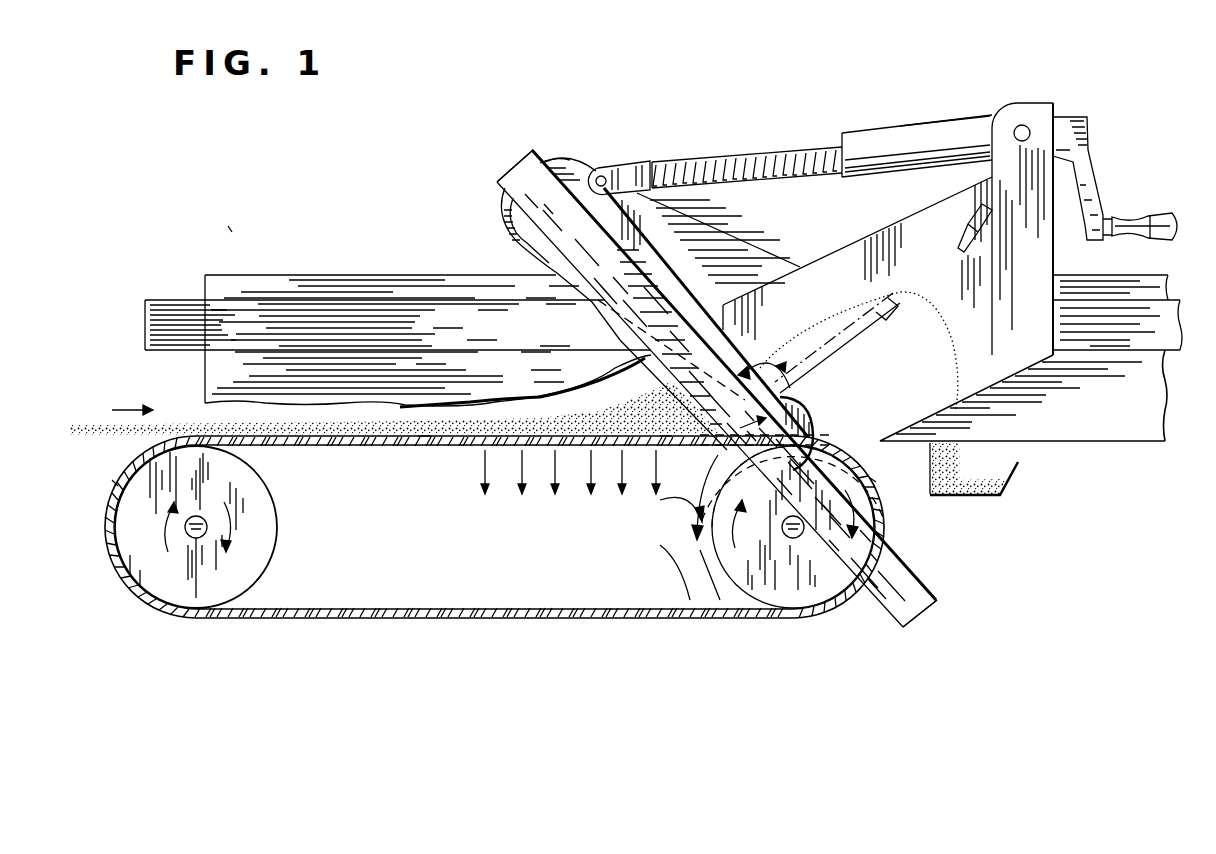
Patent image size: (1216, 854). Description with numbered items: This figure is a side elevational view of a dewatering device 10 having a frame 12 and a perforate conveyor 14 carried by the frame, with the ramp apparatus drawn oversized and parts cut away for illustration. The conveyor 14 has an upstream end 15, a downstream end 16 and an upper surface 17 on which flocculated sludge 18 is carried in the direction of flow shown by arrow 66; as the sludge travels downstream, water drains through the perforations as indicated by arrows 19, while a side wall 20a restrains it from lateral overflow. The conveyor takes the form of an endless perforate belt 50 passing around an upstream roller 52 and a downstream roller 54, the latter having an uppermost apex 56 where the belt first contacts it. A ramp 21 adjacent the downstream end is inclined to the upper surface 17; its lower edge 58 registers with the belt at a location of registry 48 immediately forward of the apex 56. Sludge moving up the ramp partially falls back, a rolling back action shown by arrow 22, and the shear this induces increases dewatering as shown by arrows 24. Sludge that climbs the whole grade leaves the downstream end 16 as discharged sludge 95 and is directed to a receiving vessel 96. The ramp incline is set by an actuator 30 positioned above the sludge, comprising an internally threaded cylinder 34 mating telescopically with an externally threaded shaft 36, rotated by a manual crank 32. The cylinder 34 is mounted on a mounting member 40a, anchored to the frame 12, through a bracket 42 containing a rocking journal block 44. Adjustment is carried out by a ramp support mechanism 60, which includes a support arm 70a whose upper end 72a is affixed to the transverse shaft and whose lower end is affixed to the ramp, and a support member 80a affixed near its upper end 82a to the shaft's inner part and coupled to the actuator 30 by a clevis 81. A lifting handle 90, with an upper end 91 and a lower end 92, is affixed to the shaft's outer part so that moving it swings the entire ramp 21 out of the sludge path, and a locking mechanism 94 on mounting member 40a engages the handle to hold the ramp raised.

The dewatering device 10 is at (232, 232).
The frame 12 is at (166, 300).
The perforate conveyor 14 is at (348, 442).
The upstream end 15 is at (115, 487).
The downstream end 16 is at (873, 480).
The upper surface 17 is at (668, 440).
The sludge 18 is at (600, 407).
The arrows 19 is at (655, 492).
The side wall 20a is at (340, 285).
The ramp 21 is at (858, 310).
The arrow 22 is at (760, 370).
The arrows 24 is at (694, 528).
The actuator 30 is at (874, 122).
The manual crank 32 is at (1100, 185).
The cylinder 34 is at (952, 120).
The shaft 36 is at (748, 148).
The mounting member 40a is at (1015, 358).
The bracket 42 is at (1040, 125).
The journal block 44 is at (1000, 105).
The location of registry 48 is at (786, 466).
The endless perforate belt 50 is at (424, 448).
The upstream roller 52 is at (268, 572).
The downstream roller 54 is at (753, 610).
The apex 56 is at (820, 442).
The lower edge 58 is at (812, 404).
The ramp support mechanism 60 is at (562, 156).
The arrow 66 is at (120, 410).
The support arm 70a is at (710, 228).
The upper end 72a is at (548, 158).
The support member 80a is at (690, 302).
The clevis 81 is at (622, 165).
The upper end 82a is at (505, 208).
The lifting handle 90 is at (920, 573).
The upper end 91 is at (508, 170).
The lower end 92 is at (932, 608).
The locking mechanism 94 is at (987, 218).
The discharged sludge 95 is at (962, 456).
The receiving vessel 96 is at (1005, 496).